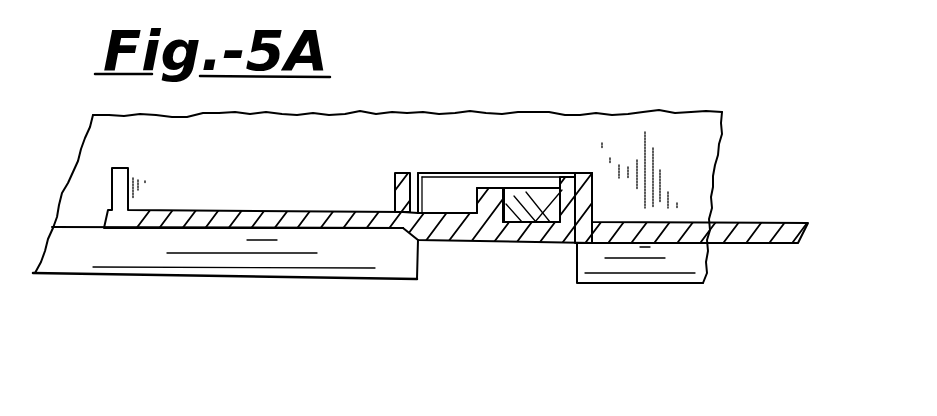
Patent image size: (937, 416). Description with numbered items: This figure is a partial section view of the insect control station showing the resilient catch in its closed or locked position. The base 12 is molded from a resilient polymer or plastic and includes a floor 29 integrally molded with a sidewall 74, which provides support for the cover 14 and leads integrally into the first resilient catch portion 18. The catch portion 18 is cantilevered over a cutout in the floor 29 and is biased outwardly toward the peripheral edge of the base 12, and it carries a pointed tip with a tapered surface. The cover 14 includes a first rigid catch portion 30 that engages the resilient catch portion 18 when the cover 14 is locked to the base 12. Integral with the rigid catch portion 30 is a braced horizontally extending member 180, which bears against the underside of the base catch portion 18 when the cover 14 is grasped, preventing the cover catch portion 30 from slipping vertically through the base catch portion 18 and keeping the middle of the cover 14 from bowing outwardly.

The base 12 is at (163, 282).
The cover 14 is at (791, 218).
The first resilient catch portion 18 is at (453, 242).
The floor 29 is at (265, 179).
The first rigid catch portion 30 is at (538, 242).
The sidewall 74 is at (338, 229).
The braced horizontally extending member 180 is at (568, 178).